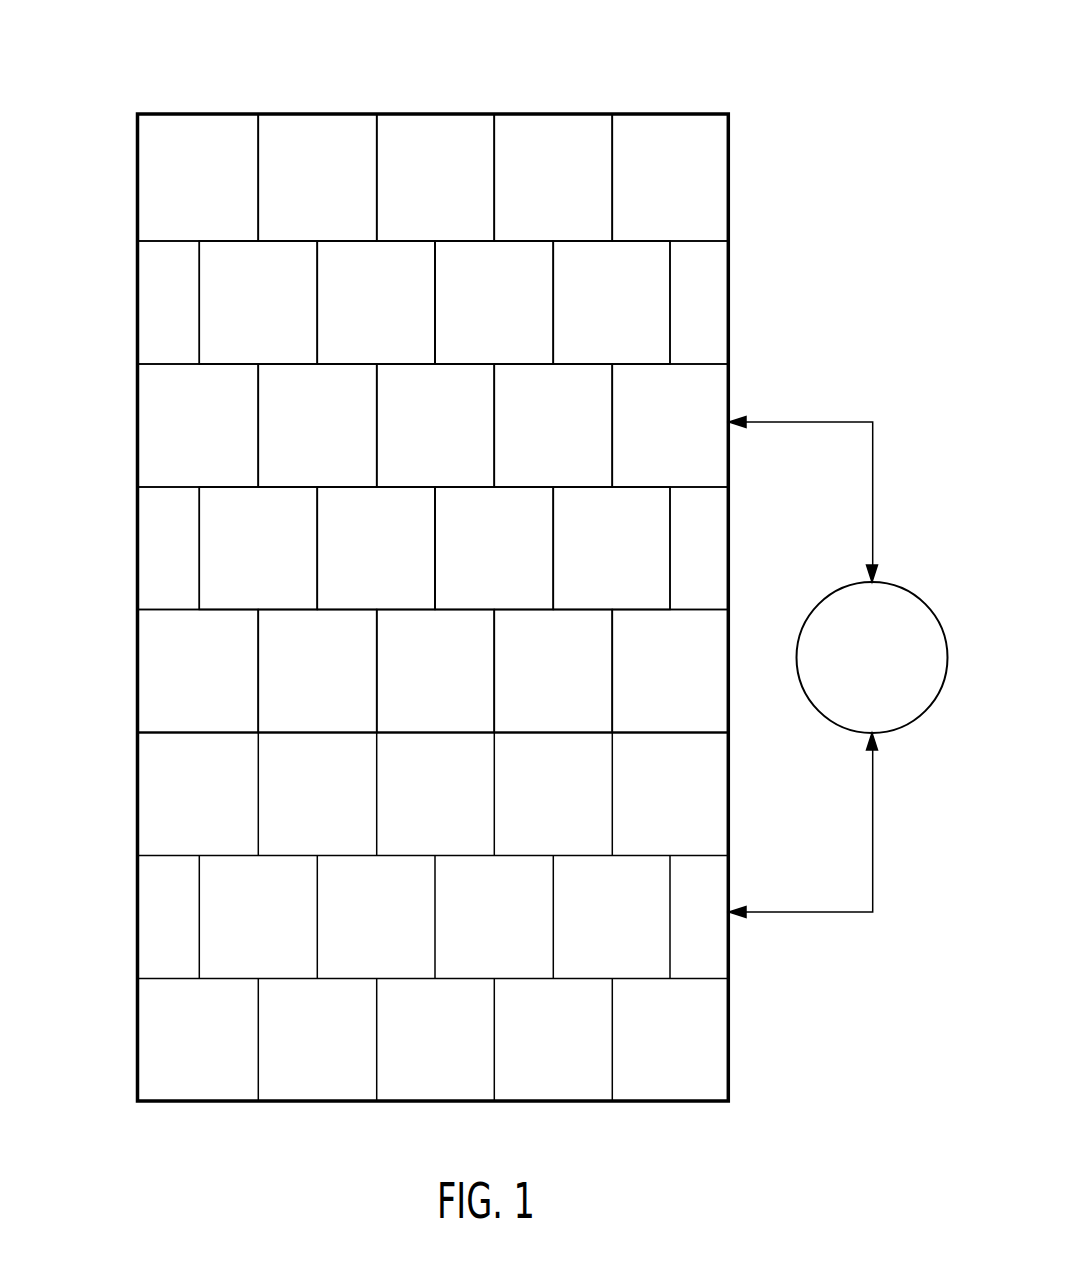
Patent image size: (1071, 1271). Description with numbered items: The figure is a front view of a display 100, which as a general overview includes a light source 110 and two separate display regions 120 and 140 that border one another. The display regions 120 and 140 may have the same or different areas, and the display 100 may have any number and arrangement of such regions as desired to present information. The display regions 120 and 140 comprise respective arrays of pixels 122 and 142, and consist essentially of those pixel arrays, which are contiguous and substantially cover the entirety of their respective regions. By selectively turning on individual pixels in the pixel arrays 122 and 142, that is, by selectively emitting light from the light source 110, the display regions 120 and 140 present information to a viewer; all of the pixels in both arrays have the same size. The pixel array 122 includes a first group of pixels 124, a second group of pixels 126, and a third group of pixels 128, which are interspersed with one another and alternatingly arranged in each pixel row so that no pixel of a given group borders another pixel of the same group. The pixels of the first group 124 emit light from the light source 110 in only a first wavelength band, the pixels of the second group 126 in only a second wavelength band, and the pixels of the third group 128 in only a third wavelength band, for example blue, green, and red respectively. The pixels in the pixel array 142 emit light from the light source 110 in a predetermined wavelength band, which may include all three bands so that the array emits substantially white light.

The display 100 is at (165, 78).
The light source 110 is at (859, 674).
The display region 120 is at (716, 100).
The pixel array 122 is at (106, 113).
The first group of pixels 124 is at (186, 194).
The second group of pixels 126 is at (300, 194).
The third group of pixels 128 is at (417, 194).
The display region 140 is at (722, 726).
The pixel array 142 is at (106, 732).